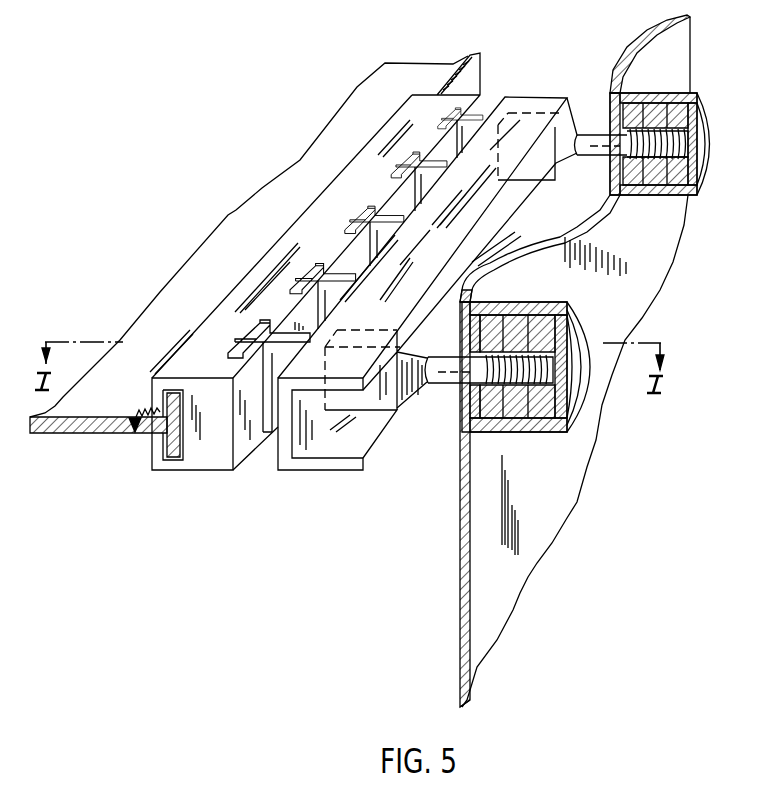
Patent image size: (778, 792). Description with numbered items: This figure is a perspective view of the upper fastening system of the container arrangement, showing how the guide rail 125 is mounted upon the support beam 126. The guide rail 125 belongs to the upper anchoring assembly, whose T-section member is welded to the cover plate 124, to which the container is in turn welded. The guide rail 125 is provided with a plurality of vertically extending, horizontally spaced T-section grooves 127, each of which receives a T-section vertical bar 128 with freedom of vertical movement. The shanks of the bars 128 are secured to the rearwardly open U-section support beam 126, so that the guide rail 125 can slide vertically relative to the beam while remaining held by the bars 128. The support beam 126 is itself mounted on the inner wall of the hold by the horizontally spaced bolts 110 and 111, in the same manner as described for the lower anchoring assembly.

The bolt 110 is at (443, 378).
The bolt 111 is at (593, 144).
The cover plate 124 is at (141, 443).
The guide rail 125 is at (208, 468).
The support beam 126 is at (350, 465).
The T-section groove 127 is at (367, 203).
The T-section vertical bar 128 is at (350, 220).